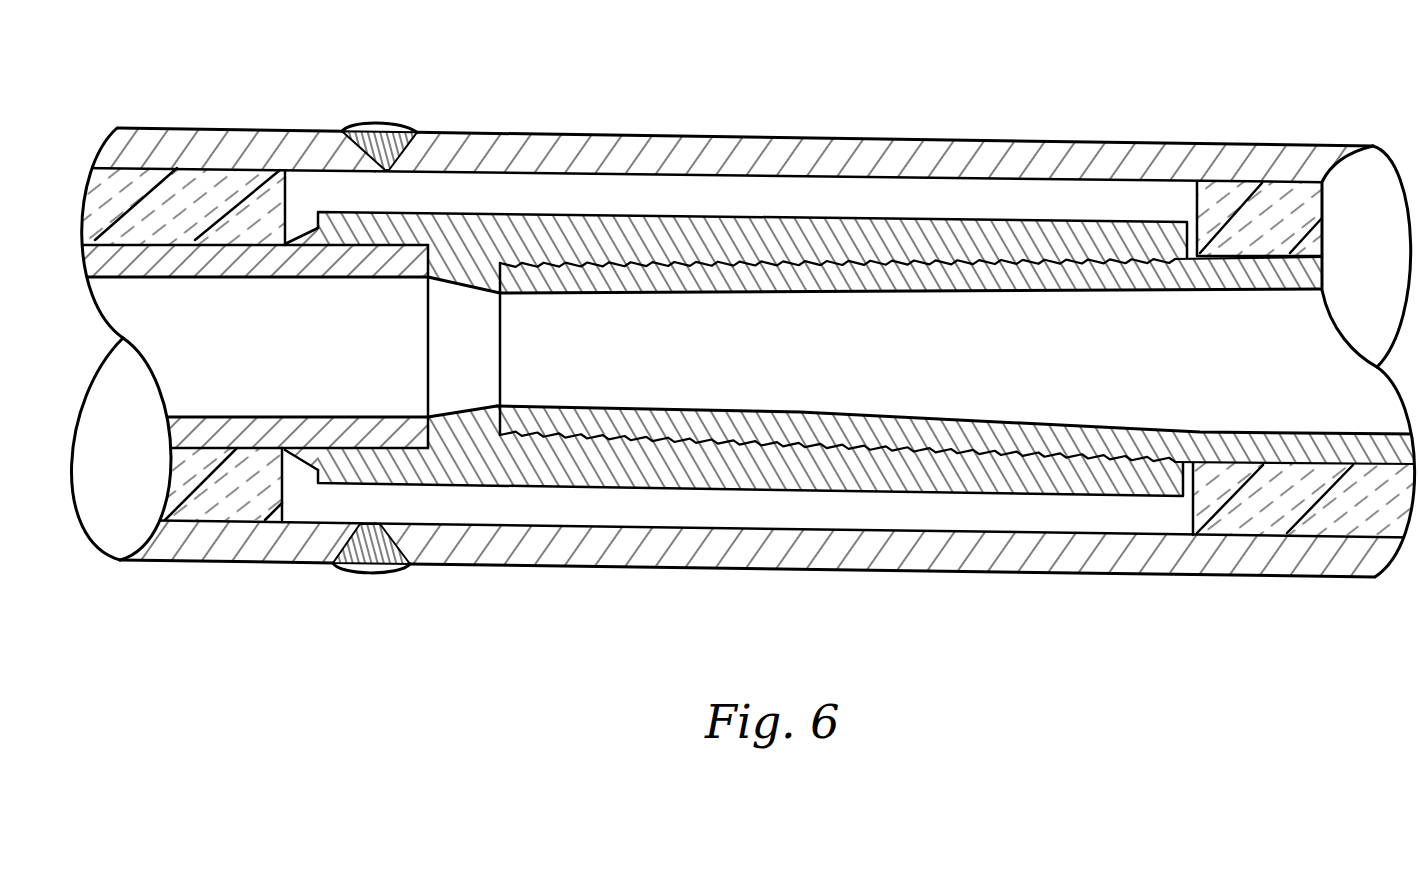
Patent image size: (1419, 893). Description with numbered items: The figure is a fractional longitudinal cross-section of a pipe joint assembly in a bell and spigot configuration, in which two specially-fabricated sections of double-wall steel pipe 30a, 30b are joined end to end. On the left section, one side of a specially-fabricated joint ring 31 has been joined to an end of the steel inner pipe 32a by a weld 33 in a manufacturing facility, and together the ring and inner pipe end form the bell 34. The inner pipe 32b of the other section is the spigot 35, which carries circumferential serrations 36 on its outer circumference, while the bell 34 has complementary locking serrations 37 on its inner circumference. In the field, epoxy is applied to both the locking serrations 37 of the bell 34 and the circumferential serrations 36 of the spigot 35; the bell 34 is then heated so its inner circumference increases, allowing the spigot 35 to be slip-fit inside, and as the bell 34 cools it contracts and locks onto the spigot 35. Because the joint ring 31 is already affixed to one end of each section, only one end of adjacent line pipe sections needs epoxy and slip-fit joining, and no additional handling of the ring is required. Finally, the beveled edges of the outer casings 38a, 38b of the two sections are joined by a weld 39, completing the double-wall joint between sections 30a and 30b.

The section of double-wall steel pipe 30a is at (243, 589).
The section of double-wall steel pipe 30b is at (1045, 598).
The joint ring 31 is at (541, 212).
The steel inner pipe 32a is at (213, 262).
The inner pipe 32b is at (973, 277).
The weld 33 is at (293, 226).
The bell 34 is at (427, 282).
The spigot 35 is at (503, 296).
The circumferential serrations 36 is at (614, 259).
The locking serrations 37 is at (713, 268).
The outer casing 38a is at (151, 128).
The outer casing 38b is at (820, 137).
The weld 39 is at (376, 122).